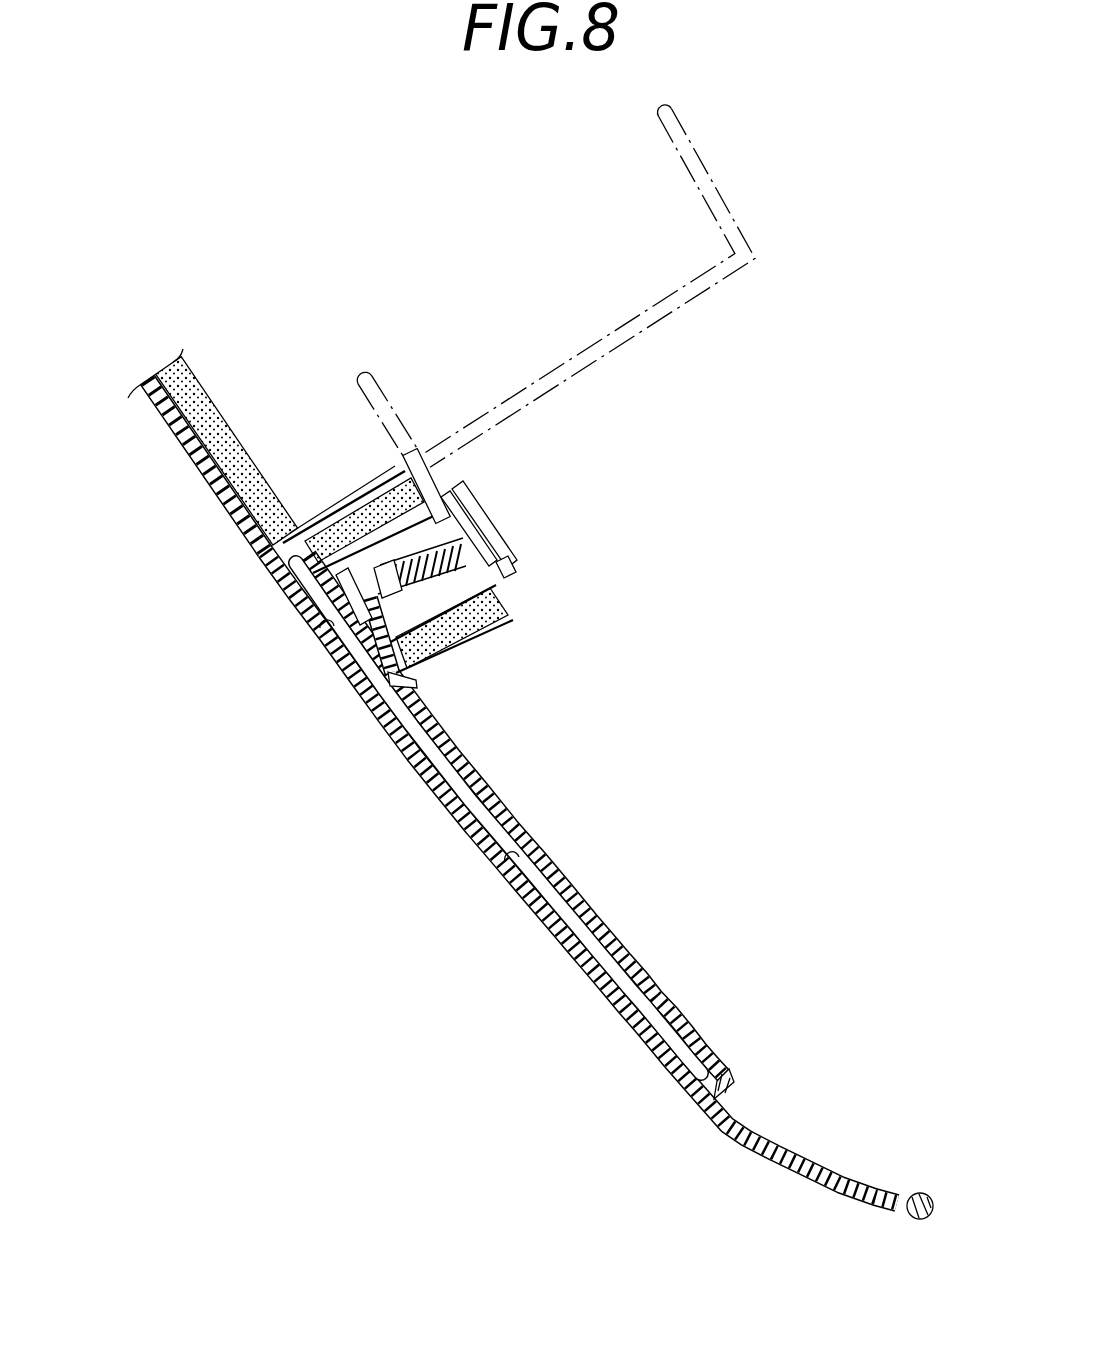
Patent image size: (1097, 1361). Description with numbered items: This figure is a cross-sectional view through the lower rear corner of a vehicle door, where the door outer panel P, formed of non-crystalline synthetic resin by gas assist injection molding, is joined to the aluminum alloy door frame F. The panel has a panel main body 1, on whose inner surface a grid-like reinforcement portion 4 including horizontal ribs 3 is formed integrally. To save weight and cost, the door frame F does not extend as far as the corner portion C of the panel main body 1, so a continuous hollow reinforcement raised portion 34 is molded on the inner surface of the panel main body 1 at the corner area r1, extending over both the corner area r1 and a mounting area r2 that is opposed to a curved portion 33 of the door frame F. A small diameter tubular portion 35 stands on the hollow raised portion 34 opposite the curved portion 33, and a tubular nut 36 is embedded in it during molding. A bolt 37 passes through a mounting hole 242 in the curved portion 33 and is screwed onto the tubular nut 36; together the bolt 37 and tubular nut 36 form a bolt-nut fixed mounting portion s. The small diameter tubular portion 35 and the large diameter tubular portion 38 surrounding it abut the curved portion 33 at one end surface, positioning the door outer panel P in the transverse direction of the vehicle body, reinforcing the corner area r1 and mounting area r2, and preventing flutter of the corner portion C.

The panel main body 1 is at (640, 1036).
The horizontal ribs 3 is at (240, 457).
The grid-like reinforcement portion 4 is at (202, 406).
The curved portion 33 is at (430, 482).
The hollow reinforcement raised portion 34 is at (606, 930).
The small diameter tubular portion 35 is at (437, 600).
The tubular nut 36 is at (340, 658).
The bolt 37 is at (514, 578).
The large diameter tubular portion 38 is at (317, 522).
The mounting hole 242 is at (497, 535).
The bolt-nut fixed mounting portion s is at (493, 512).
The corner area r1 is at (515, 863).
The mounting area r2 is at (318, 623).
The vehicle door outer panel P is at (241, 538).
The corner portion C is at (568, 973).
The door frame F is at (622, 372).